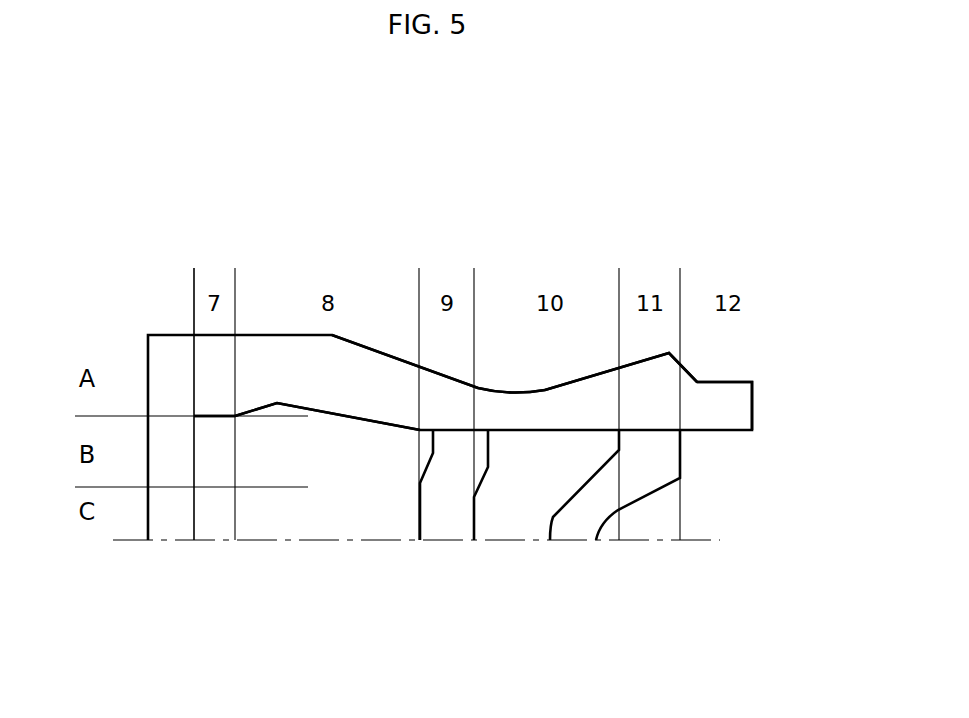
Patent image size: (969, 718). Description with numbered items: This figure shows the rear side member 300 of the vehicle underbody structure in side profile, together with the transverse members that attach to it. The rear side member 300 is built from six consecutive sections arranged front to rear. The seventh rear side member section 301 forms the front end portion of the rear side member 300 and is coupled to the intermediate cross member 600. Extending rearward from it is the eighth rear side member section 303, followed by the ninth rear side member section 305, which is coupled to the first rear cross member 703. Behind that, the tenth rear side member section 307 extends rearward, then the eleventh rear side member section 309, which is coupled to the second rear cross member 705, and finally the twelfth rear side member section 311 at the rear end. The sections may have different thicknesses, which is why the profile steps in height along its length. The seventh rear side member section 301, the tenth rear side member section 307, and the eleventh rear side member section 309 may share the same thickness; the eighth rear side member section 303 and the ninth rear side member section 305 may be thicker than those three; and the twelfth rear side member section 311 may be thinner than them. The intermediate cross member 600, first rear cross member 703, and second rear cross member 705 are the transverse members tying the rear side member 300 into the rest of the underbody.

The rear side member 300 is at (459, 430).
The seventh rear side member section 301 is at (208, 350).
The eighth rear side member section 303 is at (293, 353).
The ninth rear side member section 305 is at (442, 388).
The tenth rear side member section 307 is at (549, 397).
The eleventh rear side member section 309 is at (659, 382).
The twelfth rear side member section 311 is at (726, 402).
The intermediate cross member 600 is at (214, 513).
The first rear cross member 703 is at (449, 505).
The second rear cross member 705 is at (648, 470).